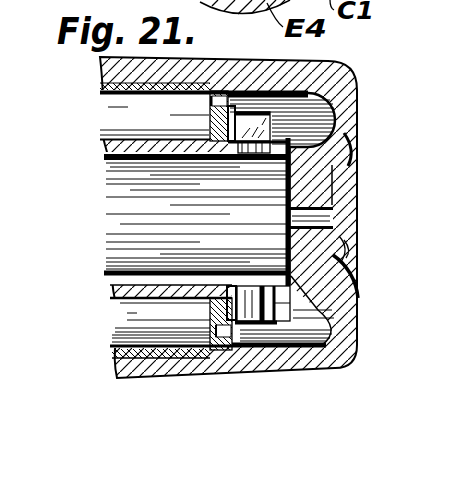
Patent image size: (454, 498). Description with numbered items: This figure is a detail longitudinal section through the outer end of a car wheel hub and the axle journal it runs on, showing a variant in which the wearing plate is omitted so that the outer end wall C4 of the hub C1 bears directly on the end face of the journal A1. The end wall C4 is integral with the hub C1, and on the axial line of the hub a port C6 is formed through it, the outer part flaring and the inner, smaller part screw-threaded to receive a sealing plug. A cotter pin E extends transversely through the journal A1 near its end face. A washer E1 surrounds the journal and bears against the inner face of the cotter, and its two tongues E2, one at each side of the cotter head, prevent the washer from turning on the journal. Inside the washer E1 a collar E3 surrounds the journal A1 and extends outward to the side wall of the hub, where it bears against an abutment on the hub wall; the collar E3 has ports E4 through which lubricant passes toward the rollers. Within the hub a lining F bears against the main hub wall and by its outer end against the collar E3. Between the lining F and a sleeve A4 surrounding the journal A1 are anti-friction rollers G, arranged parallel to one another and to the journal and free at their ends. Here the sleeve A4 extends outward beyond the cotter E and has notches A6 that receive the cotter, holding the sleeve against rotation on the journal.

The hub C1 is at (262, 60).
The outer end wall C4 is at (352, 117).
The port C6 is at (317, 219).
The journal A1 is at (122, 193).
The sleeve A4 is at (117, 293).
The notches A6 is at (282, 295).
The cotter pin E is at (272, 310).
The washer E1 is at (228, 302).
The tongues E2 is at (250, 111).
The collar E3 is at (212, 308).
The ports E4 is at (300, 62).
The lining F is at (100, 88).
The anti-friction rollers G is at (115, 115).